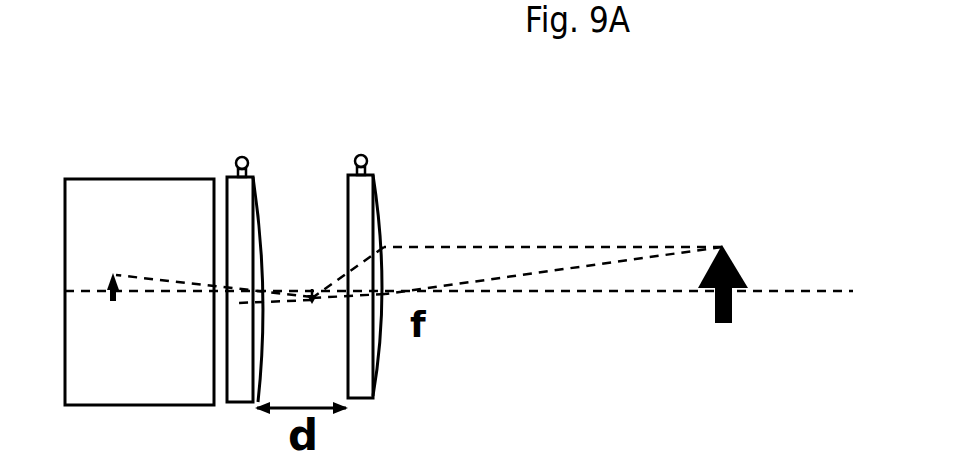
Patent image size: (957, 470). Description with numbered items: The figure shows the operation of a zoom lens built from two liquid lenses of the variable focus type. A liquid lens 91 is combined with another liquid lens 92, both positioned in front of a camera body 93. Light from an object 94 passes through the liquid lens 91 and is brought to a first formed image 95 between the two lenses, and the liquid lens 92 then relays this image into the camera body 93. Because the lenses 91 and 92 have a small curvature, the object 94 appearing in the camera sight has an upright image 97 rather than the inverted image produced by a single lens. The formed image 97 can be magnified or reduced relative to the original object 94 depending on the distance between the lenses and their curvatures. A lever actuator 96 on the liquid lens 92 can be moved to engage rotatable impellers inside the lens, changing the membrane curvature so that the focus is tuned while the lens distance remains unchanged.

The liquid lens 91 is at (383, 182).
The liquid lens 92 is at (263, 186).
The camera body 93 is at (121, 193).
The object 94 is at (729, 232).
The first formed image 95 is at (307, 286).
The lever actuator 96 is at (241, 157).
The upright image 97 is at (108, 305).